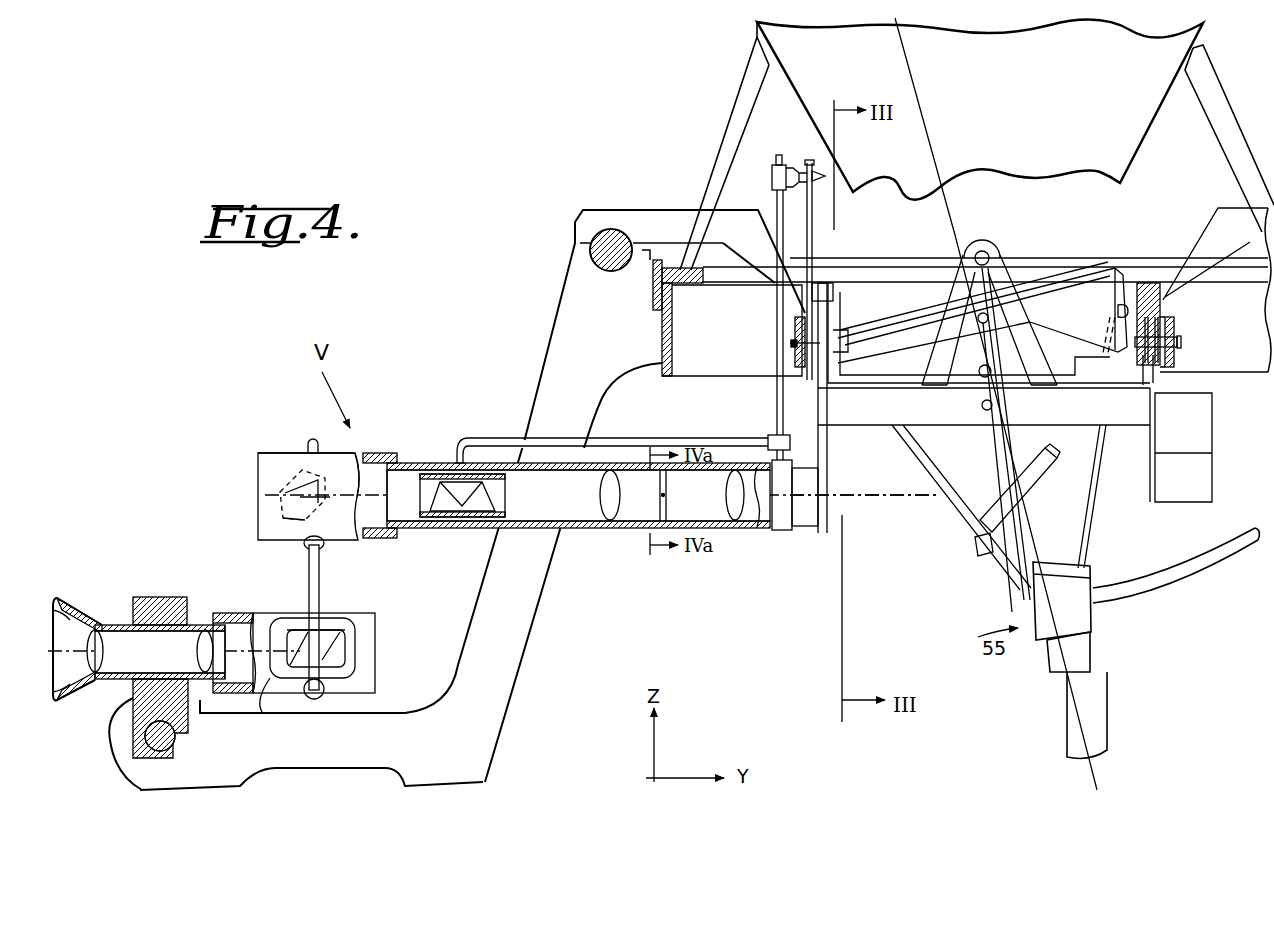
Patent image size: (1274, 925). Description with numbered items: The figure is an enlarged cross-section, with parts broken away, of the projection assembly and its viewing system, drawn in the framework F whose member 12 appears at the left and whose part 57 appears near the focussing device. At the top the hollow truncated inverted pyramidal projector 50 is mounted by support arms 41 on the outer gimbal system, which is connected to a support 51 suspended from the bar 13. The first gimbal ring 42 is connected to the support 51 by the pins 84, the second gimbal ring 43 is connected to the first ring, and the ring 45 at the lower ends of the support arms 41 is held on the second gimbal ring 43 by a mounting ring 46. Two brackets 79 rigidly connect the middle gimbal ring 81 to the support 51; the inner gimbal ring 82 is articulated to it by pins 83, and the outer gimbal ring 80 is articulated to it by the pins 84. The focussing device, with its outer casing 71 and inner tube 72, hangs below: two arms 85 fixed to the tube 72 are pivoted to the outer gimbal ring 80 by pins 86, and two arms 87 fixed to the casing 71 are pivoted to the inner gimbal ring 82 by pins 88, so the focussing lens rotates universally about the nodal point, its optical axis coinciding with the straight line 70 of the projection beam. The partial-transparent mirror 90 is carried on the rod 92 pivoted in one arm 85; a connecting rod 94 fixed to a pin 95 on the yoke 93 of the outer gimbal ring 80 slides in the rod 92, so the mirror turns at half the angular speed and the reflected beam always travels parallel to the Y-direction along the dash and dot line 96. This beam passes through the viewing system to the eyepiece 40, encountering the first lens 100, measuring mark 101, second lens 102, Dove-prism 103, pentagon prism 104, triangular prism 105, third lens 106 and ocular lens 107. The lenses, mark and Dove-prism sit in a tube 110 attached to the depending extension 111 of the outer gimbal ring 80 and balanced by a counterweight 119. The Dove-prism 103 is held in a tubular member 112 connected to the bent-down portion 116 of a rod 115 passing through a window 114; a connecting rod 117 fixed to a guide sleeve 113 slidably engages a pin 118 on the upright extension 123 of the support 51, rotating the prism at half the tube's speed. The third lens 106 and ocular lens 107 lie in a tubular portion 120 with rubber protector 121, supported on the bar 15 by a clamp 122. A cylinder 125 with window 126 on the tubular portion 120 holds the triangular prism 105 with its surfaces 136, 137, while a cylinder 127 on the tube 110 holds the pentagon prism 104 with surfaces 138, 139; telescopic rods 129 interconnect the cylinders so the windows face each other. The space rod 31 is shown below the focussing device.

The frame 12 is at (553, 381).
The bar 13 is at (592, 252).
The bar of the framework 15 is at (170, 745).
The space rod 31 is at (1082, 706).
The eyepiece 40 is at (90, 600).
The support arms 41 is at (742, 136).
The first gimbal ring 42 is at (1178, 322).
The second gimbal ring 43 is at (660, 345).
The ring 45 is at (678, 266).
The mounting ring 46 is at (657, 282).
The projector 50 is at (1122, 148).
The support 51 is at (632, 212).
The handle 57 is at (1167, 575).
The straight line representing the projection beam 70 is at (928, 130).
The outer casing 71 is at (1047, 633).
The inner tube 72 is at (1080, 655).
The brackets 79 is at (1162, 290).
The outer gimbal ring 80 is at (855, 418).
The middle gimbal ring 81 is at (907, 303).
The inner gimbal ring 82 is at (1067, 290).
The pins 83 is at (979, 371).
The pins 84 is at (792, 343).
The arms 85 is at (990, 455).
The pins 86 is at (982, 405).
The arms 87 is at (925, 478).
The pins 88 is at (1116, 308).
The partial-transparent mirror 90 is at (983, 555).
The rod 92 is at (1028, 523).
The yoke 93 is at (1005, 280).
The connecting rod 94 is at (1010, 478).
The pin 95 is at (988, 250).
The dash and dot line 96 is at (860, 497).
The first lens 100 is at (745, 520).
The measuring mark 101 is at (668, 510).
The second lens 102 is at (607, 510).
The Dove-prism 103 is at (468, 498).
The pentagon prism 104 is at (262, 490).
The triangular prism 105 is at (340, 655).
The third lens 106 is at (206, 636).
The ocular lens 107 is at (95, 640).
The tube 110 is at (575, 528).
The depending extension 111 is at (828, 528).
The tubular member 112 is at (455, 512).
The guide sleeve 113 is at (795, 530).
The window 114 is at (457, 455).
The rod 115 is at (688, 436).
The bent-down portion 116 is at (478, 432).
The connecting rod 117 is at (778, 318).
The pin 118 is at (822, 175).
The counterweight 119 is at (1210, 432).
The tubular portion 120 is at (118, 690).
The rubber protector 121 is at (67, 597).
The clamp 122 is at (170, 597).
The upright extension 123 is at (812, 244).
The cylinder 125 is at (377, 630).
The window 126 is at (333, 623).
The cylinder 127 is at (333, 455).
The telescopic rods 129 is at (306, 440).
The surface 136 is at (288, 663).
The surface 137 is at (300, 625).
The surface 138 is at (372, 455).
The surface 139 is at (300, 518).